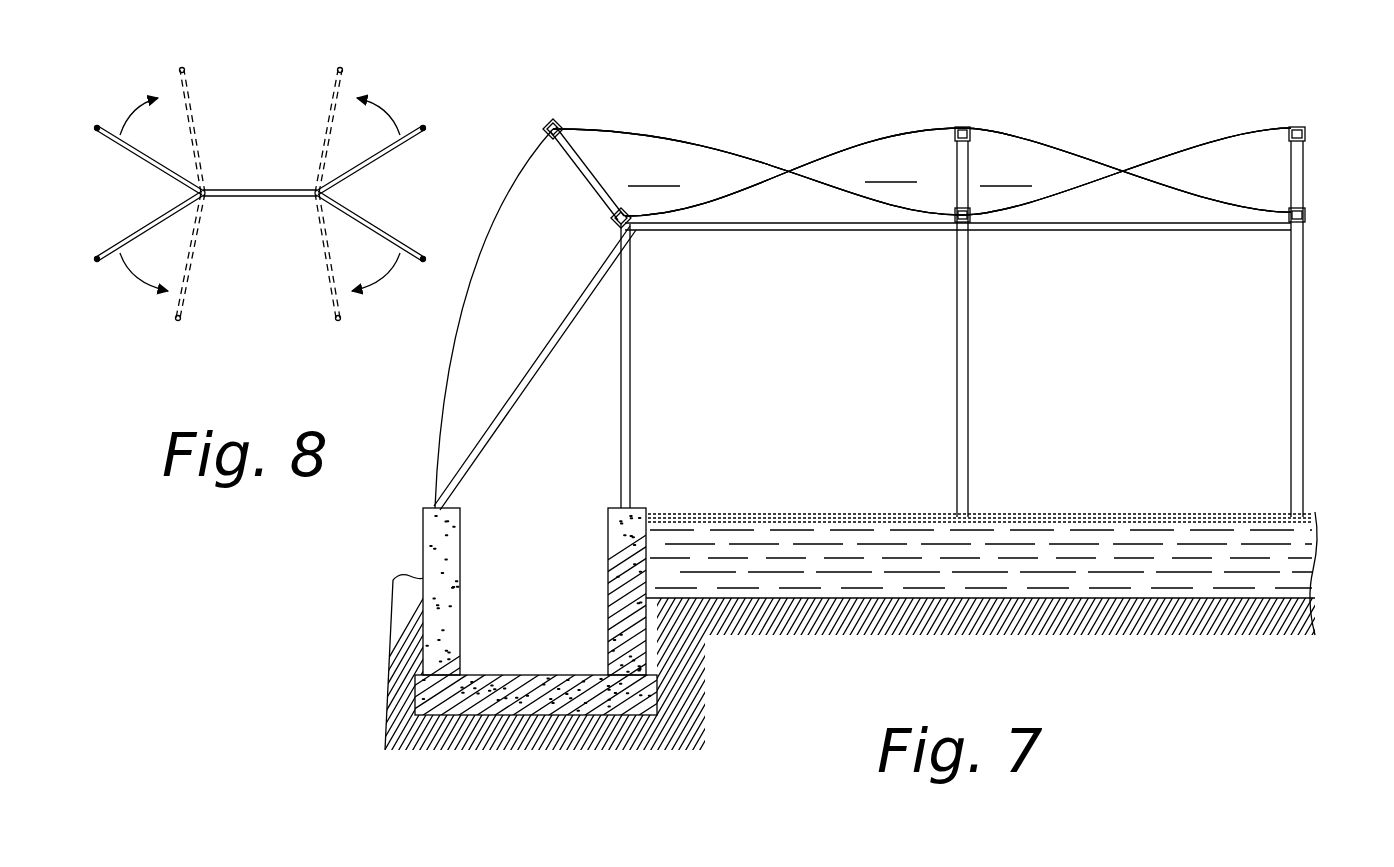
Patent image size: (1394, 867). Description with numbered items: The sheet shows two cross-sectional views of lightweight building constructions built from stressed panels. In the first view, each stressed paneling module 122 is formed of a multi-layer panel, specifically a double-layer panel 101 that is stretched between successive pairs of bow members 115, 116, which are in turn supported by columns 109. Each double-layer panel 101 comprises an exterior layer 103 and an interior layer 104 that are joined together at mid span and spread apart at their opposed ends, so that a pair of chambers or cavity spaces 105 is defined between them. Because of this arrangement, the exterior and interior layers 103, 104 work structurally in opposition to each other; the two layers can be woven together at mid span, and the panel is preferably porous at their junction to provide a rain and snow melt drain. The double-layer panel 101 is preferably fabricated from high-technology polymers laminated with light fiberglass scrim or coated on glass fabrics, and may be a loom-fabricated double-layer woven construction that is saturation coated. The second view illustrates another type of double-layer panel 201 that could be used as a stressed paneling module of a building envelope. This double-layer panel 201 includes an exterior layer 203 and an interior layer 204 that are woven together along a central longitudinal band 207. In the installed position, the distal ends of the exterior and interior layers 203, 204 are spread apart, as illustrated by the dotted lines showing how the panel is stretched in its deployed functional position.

In FIG. 7, the double-layer panel 101 is at (740, 148).
In FIG. 7, the exterior layer 103 is at (638, 128).
In FIG. 7, the interior layer 104 is at (740, 190).
In FIG. 7, the cavity space 105 is at (832, 167).
In FIG. 7, the column 109 is at (1291, 360).
In FIG. 7, the bow member 115 is at (955, 215).
In FIG. 7, the bow member 116 is at (970, 100).
In FIG. 7, the stressed paneling module 122 is at (1043, 116).
In FIG. 8, the double-layer panel 201 is at (224, 327).
In FIG. 8, the exterior layer 203 is at (408, 170).
In FIG. 8, the interior layer 204 is at (130, 236).
In FIG. 8, the central longitudinal band 207 is at (257, 189).